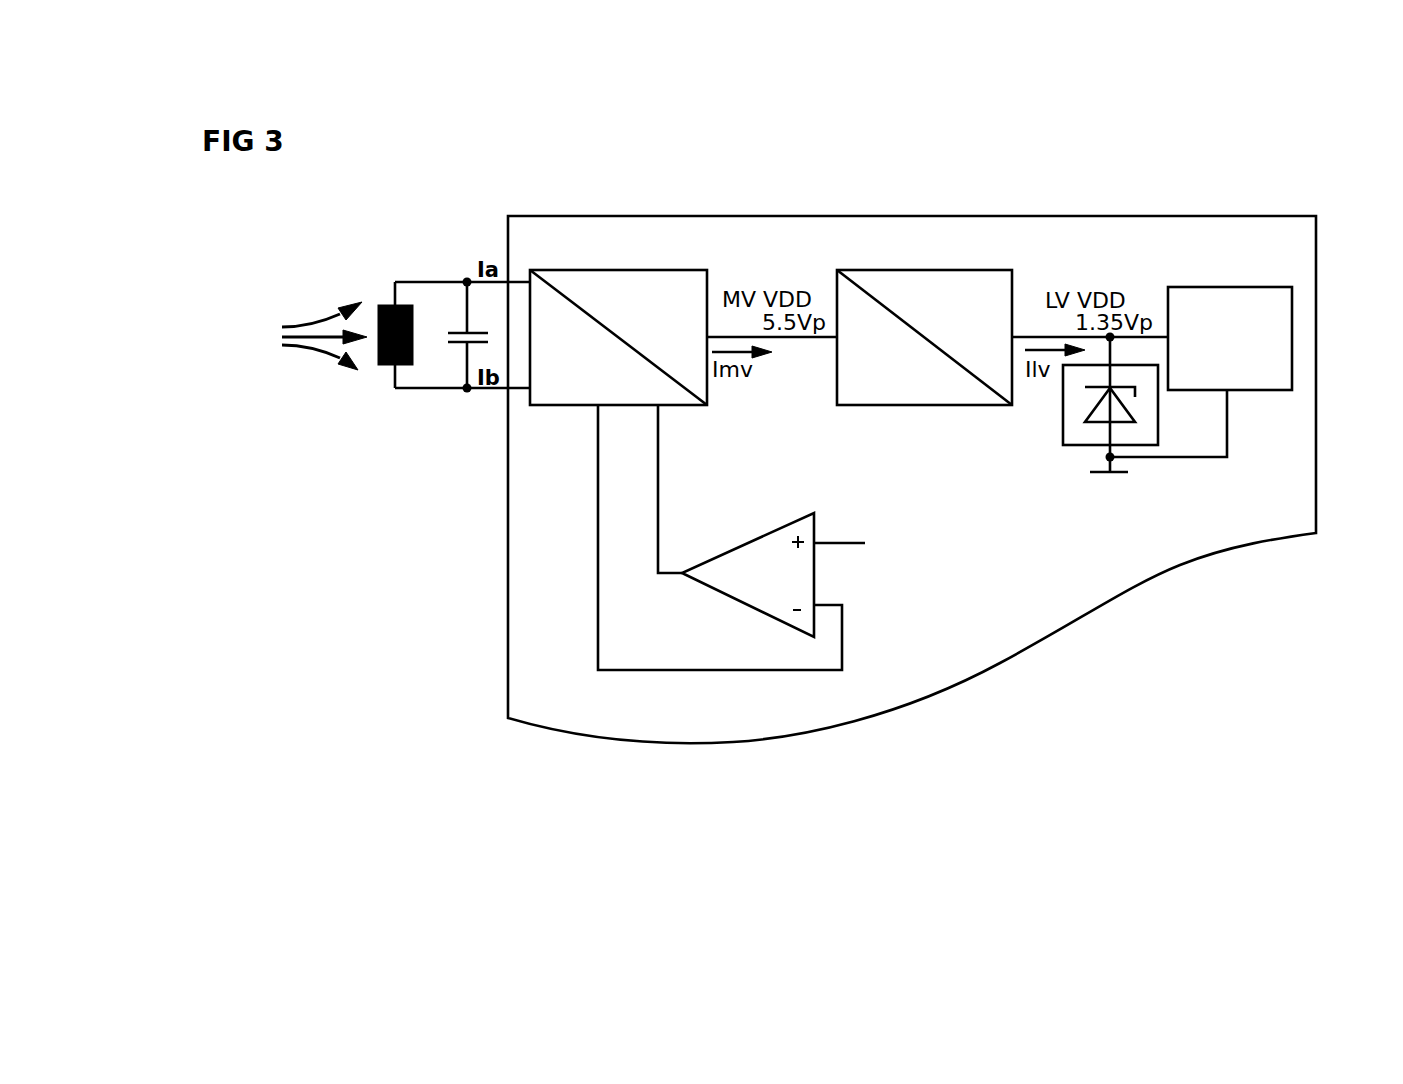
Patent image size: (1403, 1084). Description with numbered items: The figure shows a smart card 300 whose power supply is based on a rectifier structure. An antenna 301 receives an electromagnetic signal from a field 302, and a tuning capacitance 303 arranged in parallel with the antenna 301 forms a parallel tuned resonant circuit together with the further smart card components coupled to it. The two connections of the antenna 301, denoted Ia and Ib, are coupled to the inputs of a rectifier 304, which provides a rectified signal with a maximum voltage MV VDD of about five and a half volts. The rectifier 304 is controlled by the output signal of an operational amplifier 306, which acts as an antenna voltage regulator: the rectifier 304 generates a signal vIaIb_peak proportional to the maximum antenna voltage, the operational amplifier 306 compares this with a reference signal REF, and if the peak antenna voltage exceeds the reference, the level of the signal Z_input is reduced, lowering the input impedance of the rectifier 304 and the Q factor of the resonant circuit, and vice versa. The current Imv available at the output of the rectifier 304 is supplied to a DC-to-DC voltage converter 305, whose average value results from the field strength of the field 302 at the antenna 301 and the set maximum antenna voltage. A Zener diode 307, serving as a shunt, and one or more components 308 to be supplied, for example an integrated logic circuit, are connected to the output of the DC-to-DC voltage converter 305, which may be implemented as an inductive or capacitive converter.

The smart card 300 is at (1263, 216).
The antenna 301 is at (385, 303).
The field 302 is at (320, 312).
The tuning capacitance 303 is at (464, 334).
The rectifier 304 is at (705, 263).
The DC-to-DC voltage converter 305 is at (1012, 270).
The operational amplifier 306 is at (802, 513).
The Zener diode 307 is at (1158, 412).
The components to be supplied 308 is at (1292, 308).